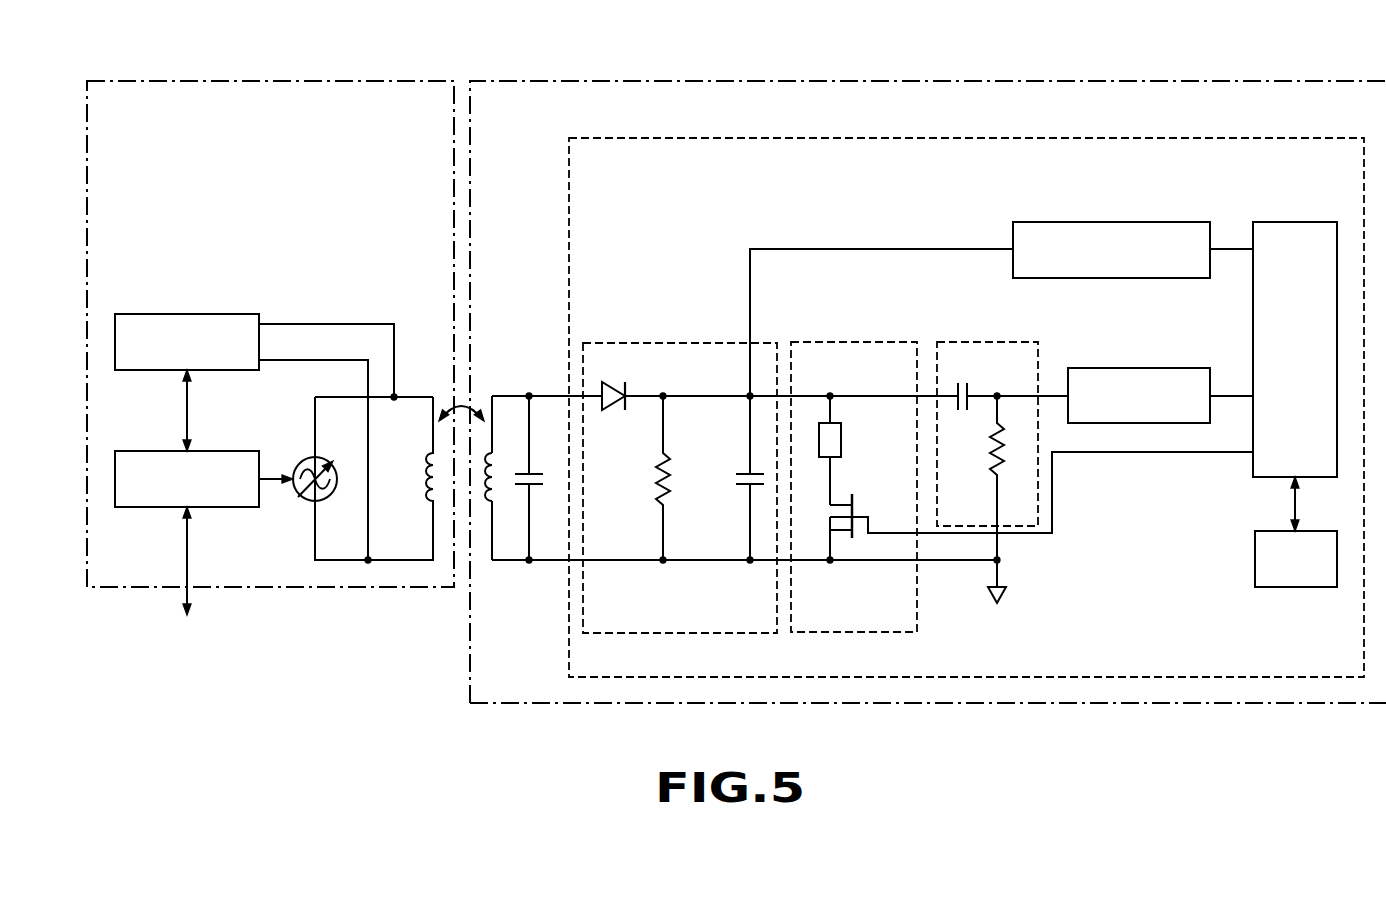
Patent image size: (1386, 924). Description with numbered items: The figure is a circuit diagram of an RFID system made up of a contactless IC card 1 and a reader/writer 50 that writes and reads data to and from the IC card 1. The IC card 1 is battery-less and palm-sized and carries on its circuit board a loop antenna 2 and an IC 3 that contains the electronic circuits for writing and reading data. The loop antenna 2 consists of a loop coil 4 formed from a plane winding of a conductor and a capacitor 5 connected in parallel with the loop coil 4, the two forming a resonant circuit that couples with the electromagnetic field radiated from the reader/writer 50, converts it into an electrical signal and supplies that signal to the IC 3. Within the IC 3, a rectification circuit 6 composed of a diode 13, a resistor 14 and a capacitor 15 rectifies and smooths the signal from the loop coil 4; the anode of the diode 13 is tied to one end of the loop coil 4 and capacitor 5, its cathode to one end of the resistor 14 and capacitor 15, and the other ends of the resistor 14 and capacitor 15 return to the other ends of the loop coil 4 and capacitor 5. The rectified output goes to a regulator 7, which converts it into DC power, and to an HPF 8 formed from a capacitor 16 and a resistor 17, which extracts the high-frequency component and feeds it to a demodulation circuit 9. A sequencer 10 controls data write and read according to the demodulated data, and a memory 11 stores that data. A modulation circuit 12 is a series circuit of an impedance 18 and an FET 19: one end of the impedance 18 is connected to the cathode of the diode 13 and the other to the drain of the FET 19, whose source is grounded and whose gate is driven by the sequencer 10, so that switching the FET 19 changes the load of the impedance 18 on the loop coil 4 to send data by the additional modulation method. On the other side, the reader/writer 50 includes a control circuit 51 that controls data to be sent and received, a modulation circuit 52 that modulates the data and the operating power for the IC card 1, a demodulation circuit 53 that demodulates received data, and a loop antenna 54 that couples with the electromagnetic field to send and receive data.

The contactless IC card 1 is at (930, 80).
The loop antenna 2 is at (474, 522).
The IC 3 is at (567, 207).
The loop coil 4 is at (494, 470).
The capacitor 5 is at (535, 470).
The rectification circuit 6 is at (641, 341).
The regulator 7 is at (1107, 220).
The HPF 8 is at (988, 340).
The demodulation circuit 9 is at (1140, 366).
The sequencer 10 is at (1292, 220).
The memory 11 is at (1293, 589).
The modulation circuit 12 is at (836, 340).
The diode 13 is at (612, 388).
The resistor 14 is at (655, 482).
The capacitor 15 is at (741, 472).
The capacitor 16 is at (963, 412).
The resistor 17 is at (992, 478).
The impedance 18 is at (842, 432).
The FET 19 is at (856, 510).
The reader/writer 50 is at (312, 47).
The control circuit 51 is at (222, 450).
The modulation circuit 52 is at (295, 493).
The demodulation circuit 53 is at (186, 313).
The loop antenna 54 is at (424, 492).